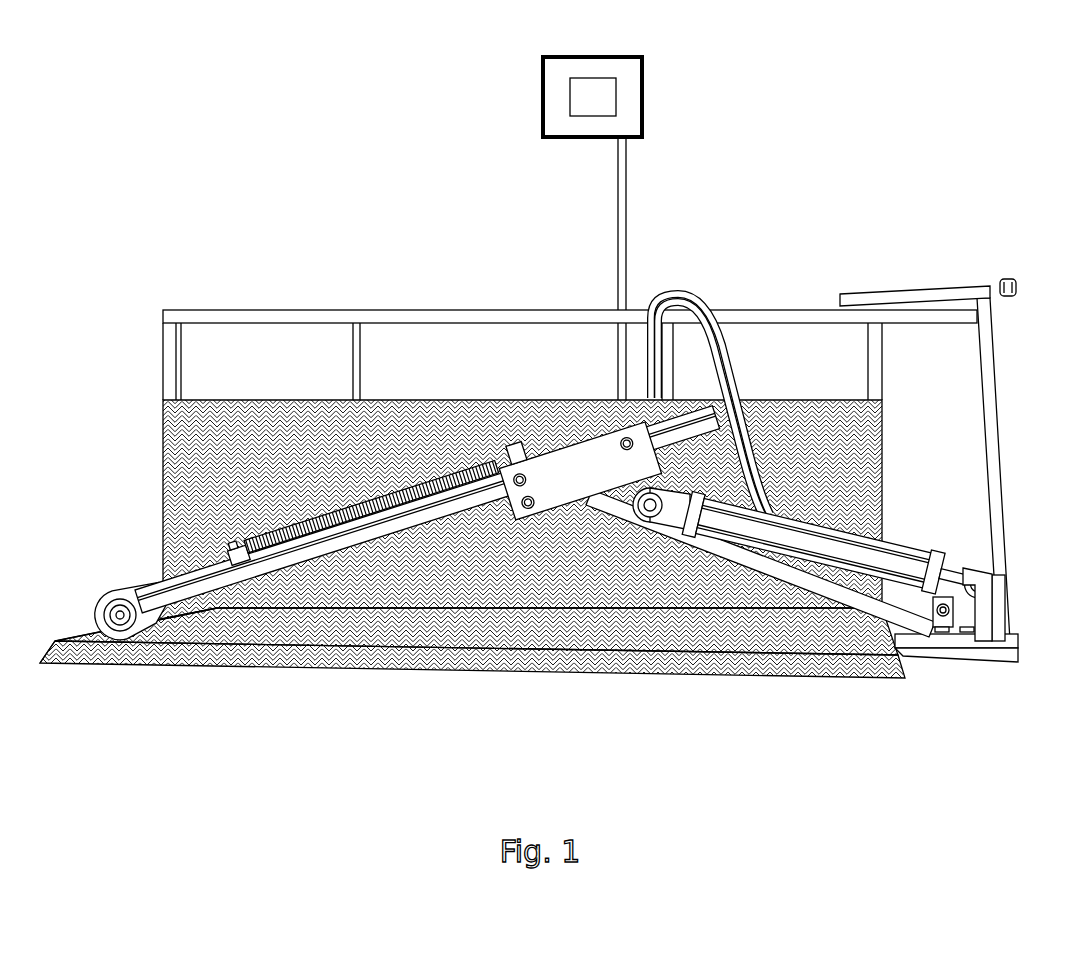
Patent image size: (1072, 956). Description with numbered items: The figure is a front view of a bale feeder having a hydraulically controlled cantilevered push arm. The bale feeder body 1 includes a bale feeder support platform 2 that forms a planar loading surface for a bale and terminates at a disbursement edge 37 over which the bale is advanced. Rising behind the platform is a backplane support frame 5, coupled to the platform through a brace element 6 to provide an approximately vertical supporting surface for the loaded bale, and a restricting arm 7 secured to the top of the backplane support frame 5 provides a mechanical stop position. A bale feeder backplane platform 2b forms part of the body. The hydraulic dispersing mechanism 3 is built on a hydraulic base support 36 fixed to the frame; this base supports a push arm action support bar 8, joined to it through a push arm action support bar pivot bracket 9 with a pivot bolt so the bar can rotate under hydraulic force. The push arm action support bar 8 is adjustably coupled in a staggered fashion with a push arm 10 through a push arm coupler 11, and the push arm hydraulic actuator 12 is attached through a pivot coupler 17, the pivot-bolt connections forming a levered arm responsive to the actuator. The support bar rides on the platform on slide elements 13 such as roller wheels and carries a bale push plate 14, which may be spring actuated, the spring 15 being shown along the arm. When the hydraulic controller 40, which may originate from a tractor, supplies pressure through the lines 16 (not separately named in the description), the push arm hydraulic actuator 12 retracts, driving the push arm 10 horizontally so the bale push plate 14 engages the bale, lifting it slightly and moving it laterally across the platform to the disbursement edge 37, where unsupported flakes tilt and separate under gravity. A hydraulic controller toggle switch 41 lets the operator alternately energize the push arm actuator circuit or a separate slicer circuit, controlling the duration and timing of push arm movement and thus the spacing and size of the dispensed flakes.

The bale feeder body 1 is at (133, 478).
The ground slab 2 is at (215, 630).
The bale feeder backplane platform 2b is at (290, 578).
The hydraulic dispersing mechanism 3 is at (913, 482).
The backplane support frame 5 is at (412, 312).
The brace element 6 is at (990, 412).
The restricting arm 7 is at (1003, 290).
The push arm action support bar 8 is at (710, 548).
The push arm action support bar pivot bracket 9 is at (987, 645).
The push arm 10 is at (352, 540).
The push arm coupler 11 is at (568, 478).
The push arm hydraulic actuator 12 is at (818, 542).
The slide elements 13 is at (118, 617).
The bale push plate 14 is at (162, 585).
The spring 15 is at (400, 497).
The hydraulic hoses and control post 16 is at (670, 293).
The pivot coupler 17 is at (640, 480).
The hydraulic base support 36 is at (905, 625).
The disbursement edge 37 is at (97, 630).
The hydraulic controller 40 is at (642, 73).
The hydraulic controller toggle switch 41 is at (570, 100).